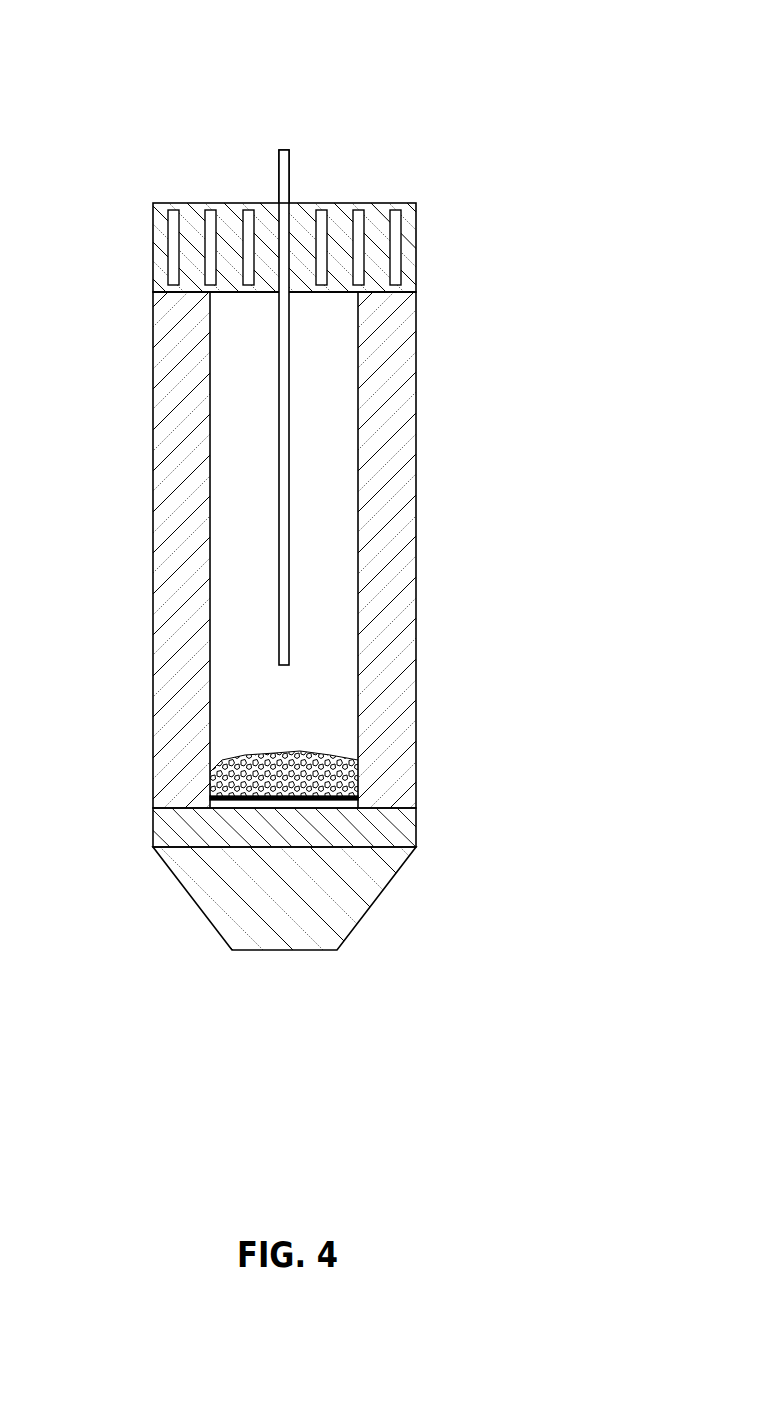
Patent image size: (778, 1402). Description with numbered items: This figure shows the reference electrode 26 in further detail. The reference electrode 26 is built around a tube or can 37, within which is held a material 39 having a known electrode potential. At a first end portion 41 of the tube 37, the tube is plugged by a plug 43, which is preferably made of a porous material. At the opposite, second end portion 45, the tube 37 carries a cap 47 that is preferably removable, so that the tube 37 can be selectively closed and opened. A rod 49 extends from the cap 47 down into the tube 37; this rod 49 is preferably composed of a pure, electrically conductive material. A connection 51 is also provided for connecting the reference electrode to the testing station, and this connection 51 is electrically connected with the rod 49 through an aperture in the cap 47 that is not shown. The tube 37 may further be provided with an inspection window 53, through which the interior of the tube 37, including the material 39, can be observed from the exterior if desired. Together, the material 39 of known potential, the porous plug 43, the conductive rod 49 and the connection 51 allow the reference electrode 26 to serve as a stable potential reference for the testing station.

The reference electrode 26 is at (389, 476).
The tube 37 is at (416, 537).
The material 39 is at (237, 752).
The first end portion 41 is at (416, 777).
The plug 43 is at (390, 878).
The second end portion 45 is at (416, 327).
The cap 47 is at (416, 252).
The rod 49 is at (289, 496).
The connection 51 is at (278, 175).
The inspection window 53 is at (240, 366).